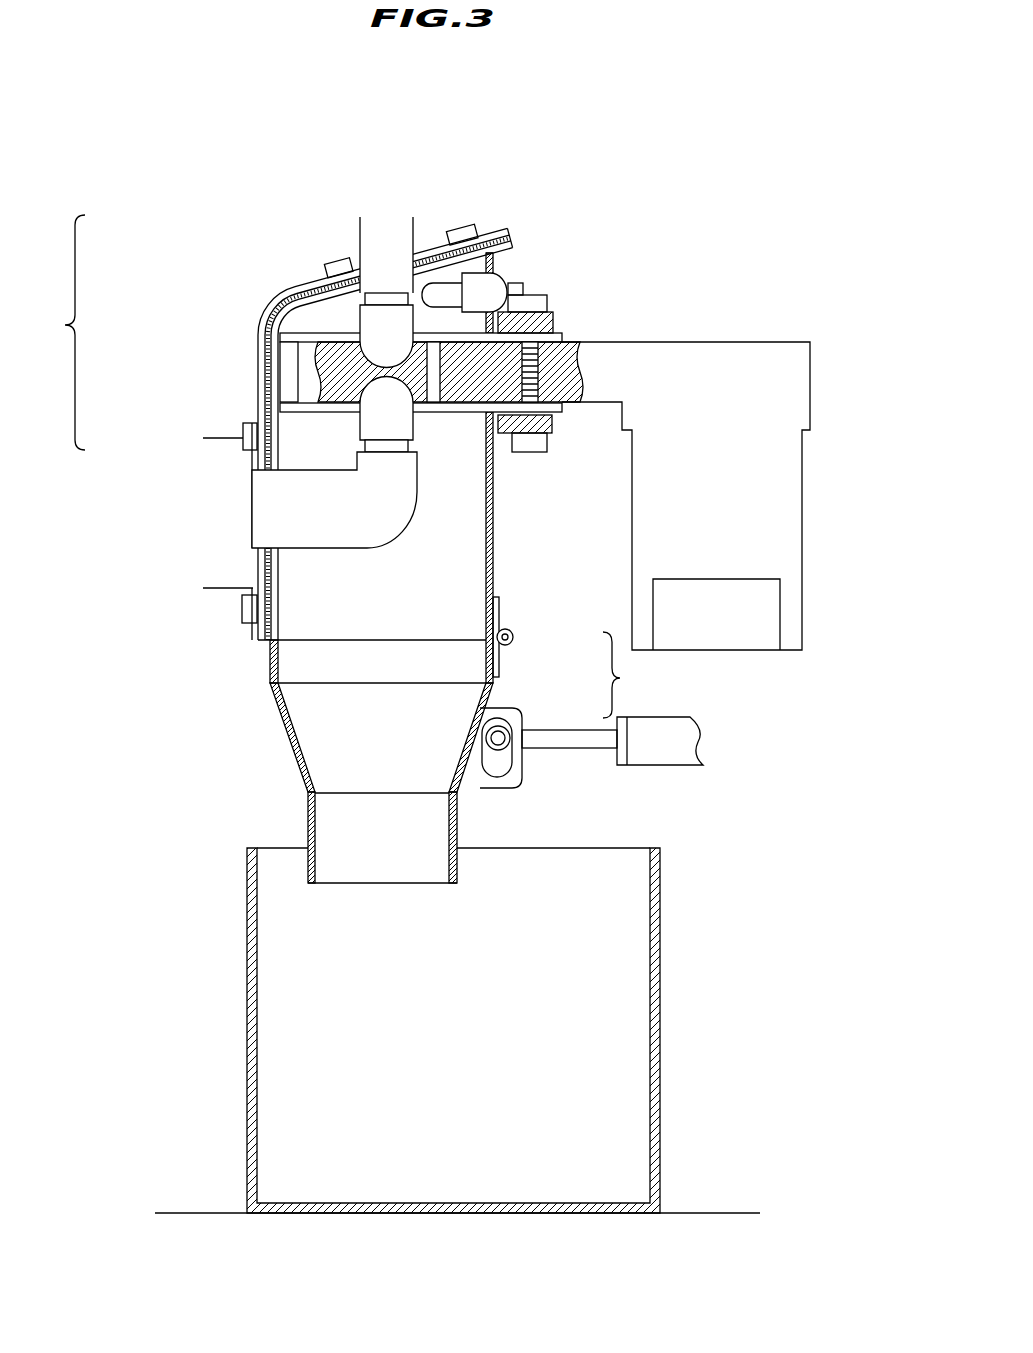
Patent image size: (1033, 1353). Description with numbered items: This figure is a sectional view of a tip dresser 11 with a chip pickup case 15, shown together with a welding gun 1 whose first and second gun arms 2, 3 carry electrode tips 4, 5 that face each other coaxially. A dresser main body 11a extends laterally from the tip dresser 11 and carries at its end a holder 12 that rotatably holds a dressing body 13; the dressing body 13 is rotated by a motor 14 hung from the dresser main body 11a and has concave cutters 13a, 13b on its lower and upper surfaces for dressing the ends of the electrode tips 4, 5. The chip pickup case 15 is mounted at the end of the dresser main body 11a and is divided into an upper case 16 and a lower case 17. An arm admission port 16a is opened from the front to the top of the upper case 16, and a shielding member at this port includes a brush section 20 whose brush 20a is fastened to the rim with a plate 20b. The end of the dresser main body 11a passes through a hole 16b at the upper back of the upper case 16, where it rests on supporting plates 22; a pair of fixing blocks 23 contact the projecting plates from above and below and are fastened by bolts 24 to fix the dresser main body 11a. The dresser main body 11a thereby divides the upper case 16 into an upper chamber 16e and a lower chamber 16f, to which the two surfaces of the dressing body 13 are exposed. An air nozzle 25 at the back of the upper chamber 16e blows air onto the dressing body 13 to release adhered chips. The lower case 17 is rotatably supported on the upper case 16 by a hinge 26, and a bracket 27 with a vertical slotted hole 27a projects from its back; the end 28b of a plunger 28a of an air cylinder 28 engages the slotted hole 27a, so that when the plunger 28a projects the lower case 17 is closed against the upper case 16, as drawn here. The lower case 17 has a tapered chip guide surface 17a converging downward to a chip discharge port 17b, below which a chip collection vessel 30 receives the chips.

The welding gun 1 is at (65, 332).
The first gun arm 2 is at (305, 470).
The second gun arm 3 is at (360, 240).
The electrode tip 4 is at (420, 425).
The electrode tip 5 is at (288, 292).
The tip dresser 11 is at (545, 447).
The dresser main body 11a is at (745, 360).
The holder 12 is at (340, 397).
The dressing body 13 is at (454, 478).
The concave cutter 13a is at (383, 378).
The concave cutter 13b is at (370, 312).
The motor 14 is at (716, 566).
The chip pickup case 15 is at (573, 657).
The upper case 16 is at (424, 434).
The arm admission port 16a is at (278, 610).
The hole 16b is at (489, 460).
The upper chamber 16e is at (490, 250).
The lower chamber 16f is at (429, 608).
The lower case 17 is at (406, 795).
The chip guide surface 17a is at (320, 750).
The chip discharge port 17b is at (382, 863).
The brush section 20 is at (457, 209).
The brush 20a is at (513, 236).
The plate 20b is at (440, 242).
The supporting plate 22 is at (287, 408).
The fixing block 23 is at (552, 316).
The bolt 24 is at (513, 297).
The air nozzle 25 is at (495, 277).
The hinge 26 is at (510, 648).
The bracket 27 is at (483, 769).
The slotted hole 27a is at (520, 765).
The air cylinder 28 is at (613, 781).
The plunger 28a is at (575, 748).
The end of plunger 28b is at (493, 720).
The chip collection vessel 30 is at (650, 985).